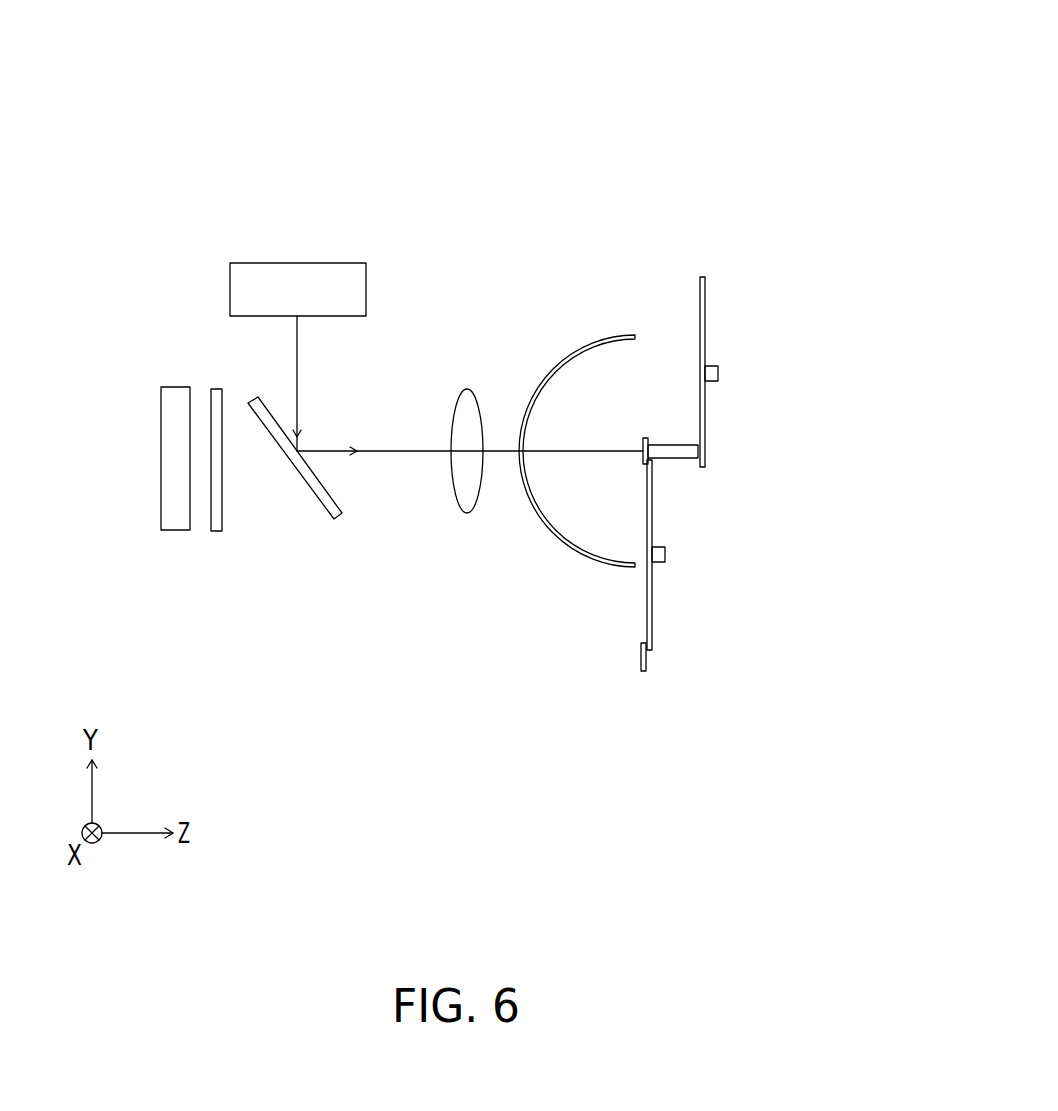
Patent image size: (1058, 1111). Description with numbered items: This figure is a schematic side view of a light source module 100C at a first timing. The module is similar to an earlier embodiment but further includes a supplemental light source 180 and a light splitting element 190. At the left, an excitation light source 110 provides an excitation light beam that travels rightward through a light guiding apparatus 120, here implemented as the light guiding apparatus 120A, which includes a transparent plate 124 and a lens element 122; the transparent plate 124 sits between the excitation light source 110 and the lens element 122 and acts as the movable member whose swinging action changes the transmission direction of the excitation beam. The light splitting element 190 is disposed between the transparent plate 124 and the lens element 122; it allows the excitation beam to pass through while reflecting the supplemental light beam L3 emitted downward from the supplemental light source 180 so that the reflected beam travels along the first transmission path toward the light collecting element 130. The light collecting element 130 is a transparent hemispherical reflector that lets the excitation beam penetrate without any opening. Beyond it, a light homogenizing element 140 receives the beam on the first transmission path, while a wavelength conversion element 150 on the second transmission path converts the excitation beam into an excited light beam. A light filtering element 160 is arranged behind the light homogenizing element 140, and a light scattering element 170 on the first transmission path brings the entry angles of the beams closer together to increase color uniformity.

The light source module 100C is at (827, 778).
The excitation light source 110 is at (161, 468).
The light guiding apparatus 120 is at (361, 538).
The light guiding apparatus 120A is at (778, 12).
The lens element 122 is at (467, 515).
The transparent plate 124 is at (213, 532).
The light collecting element 130 is at (565, 356).
The light homogenizing element 140 is at (674, 445).
The wavelength conversion element 150 is at (652, 607).
The light filtering element 160 is at (705, 279).
The light scattering element 170 is at (643, 671).
The supplemental light source 180 is at (299, 263).
The light splitting element 190 is at (334, 519).
The supplemental light beam L3 is at (297, 343).